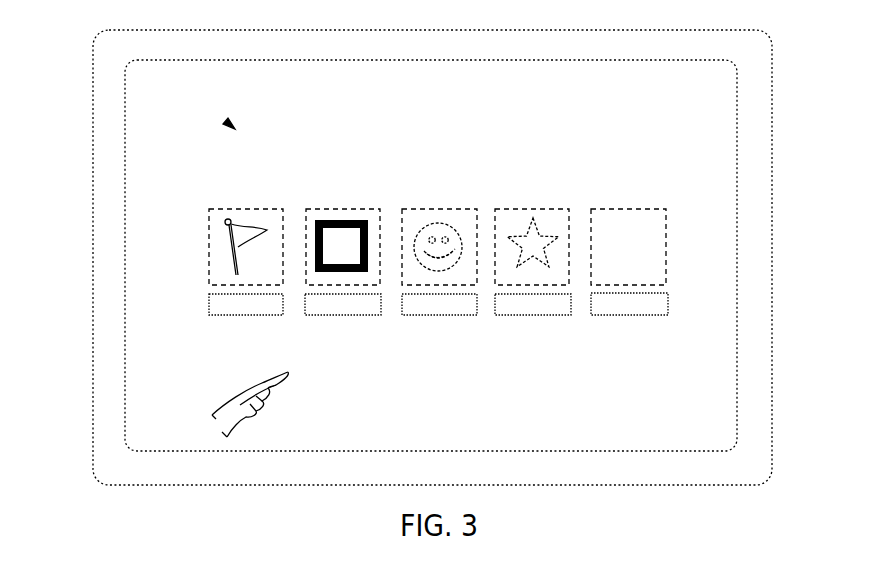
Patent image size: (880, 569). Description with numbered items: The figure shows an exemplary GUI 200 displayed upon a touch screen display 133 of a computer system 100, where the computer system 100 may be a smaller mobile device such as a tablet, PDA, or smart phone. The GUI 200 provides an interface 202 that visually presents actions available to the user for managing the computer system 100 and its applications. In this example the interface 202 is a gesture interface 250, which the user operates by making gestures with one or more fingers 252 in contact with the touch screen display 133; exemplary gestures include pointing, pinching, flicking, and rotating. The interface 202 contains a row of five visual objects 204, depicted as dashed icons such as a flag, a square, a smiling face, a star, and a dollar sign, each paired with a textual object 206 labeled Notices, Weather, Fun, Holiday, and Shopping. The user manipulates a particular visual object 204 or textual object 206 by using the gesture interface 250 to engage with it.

The computer system 100 is at (93, 63).
The touch screen display 133 is at (125, 123).
The GUI 200 is at (140, 175).
The interface 202 is at (412, 95).
The visual object 204 is at (250, 209).
The textual object 206 is at (257, 316).
The gesture interface 250 is at (230, 122).
The finger 252 is at (284, 378).